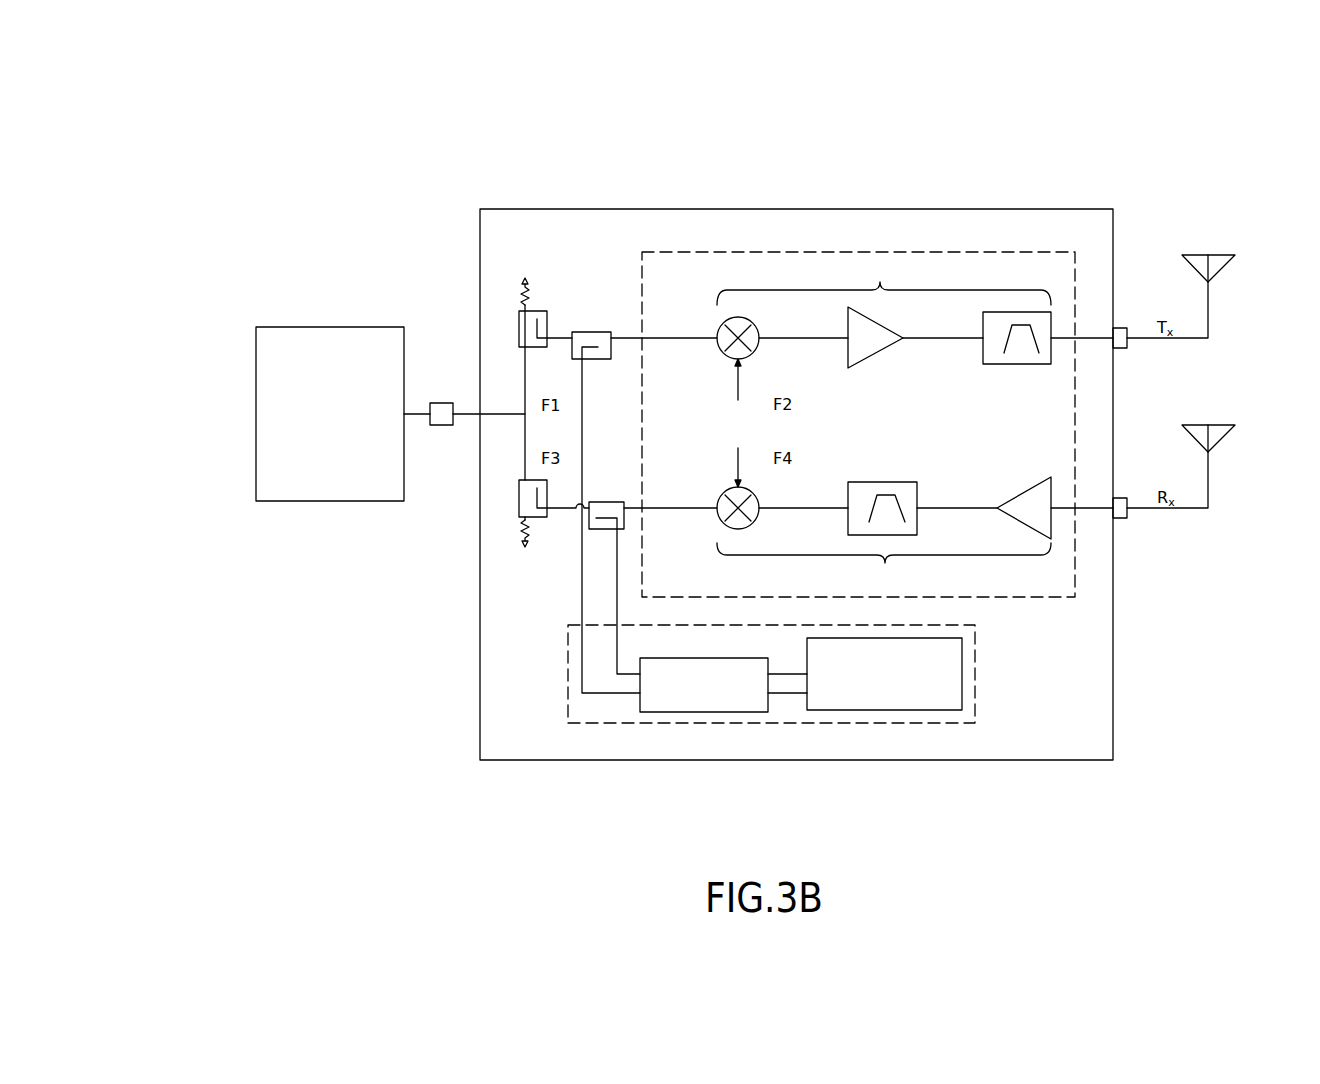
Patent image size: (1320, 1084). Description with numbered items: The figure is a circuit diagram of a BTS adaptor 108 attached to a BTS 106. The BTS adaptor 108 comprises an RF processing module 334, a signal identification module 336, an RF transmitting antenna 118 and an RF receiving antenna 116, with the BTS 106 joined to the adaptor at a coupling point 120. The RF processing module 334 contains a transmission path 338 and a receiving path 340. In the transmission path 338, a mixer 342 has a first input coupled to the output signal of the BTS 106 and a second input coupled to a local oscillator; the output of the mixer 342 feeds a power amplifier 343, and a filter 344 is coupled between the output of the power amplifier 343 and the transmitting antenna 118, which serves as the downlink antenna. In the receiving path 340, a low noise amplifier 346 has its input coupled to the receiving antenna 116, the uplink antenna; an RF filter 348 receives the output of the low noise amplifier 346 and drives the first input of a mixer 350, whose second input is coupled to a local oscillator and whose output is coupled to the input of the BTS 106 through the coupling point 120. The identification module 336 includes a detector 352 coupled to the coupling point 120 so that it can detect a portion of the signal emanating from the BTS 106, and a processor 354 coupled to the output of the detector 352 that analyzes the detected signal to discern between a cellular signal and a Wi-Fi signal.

The BTS 106 is at (256, 360).
The BTS adaptor 108 is at (557, 209).
The RF receiving antenna 116 is at (1208, 438).
The RF transmitting antenna 118 is at (1208, 268).
The coupling point 120 is at (440, 403).
The RF processing module 334 is at (858, 251).
The signal identification module 336 is at (568, 672).
The transmission path 338 is at (884, 283).
The receiving path 340 is at (884, 569).
The mixer 342 is at (728, 358).
The power amplifier 343 is at (872, 356).
The filter 344 is at (1017, 364).
The low noise amplifier 346 is at (1029, 489).
The RF filter 348 is at (882, 482).
The mixer 350 is at (732, 486).
The detector 352 is at (705, 712).
The processor 354 is at (883, 710).